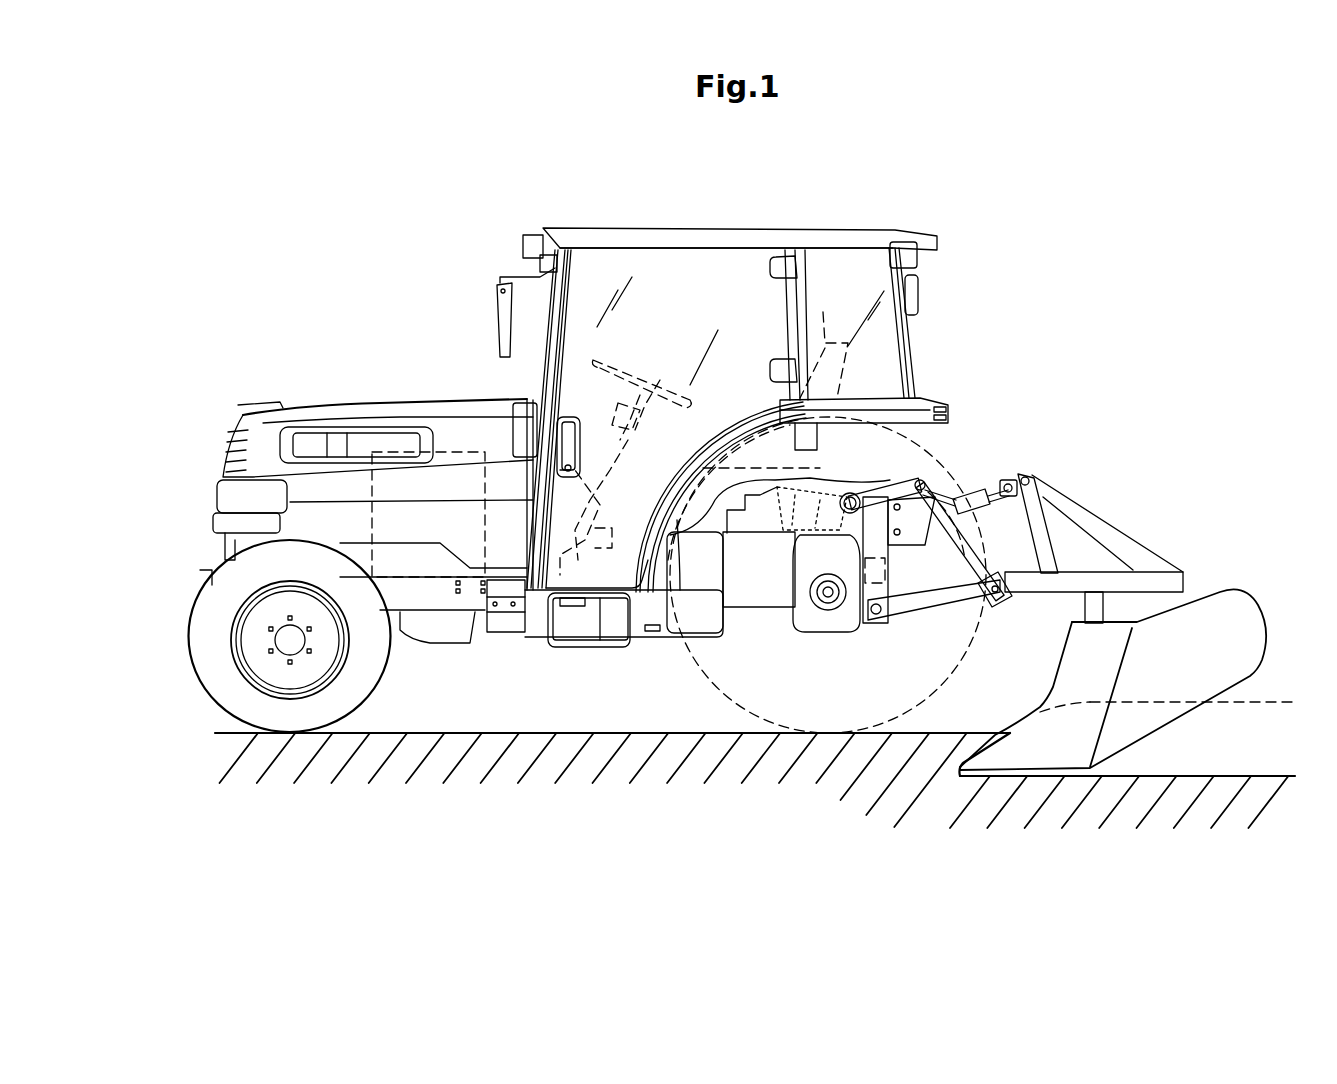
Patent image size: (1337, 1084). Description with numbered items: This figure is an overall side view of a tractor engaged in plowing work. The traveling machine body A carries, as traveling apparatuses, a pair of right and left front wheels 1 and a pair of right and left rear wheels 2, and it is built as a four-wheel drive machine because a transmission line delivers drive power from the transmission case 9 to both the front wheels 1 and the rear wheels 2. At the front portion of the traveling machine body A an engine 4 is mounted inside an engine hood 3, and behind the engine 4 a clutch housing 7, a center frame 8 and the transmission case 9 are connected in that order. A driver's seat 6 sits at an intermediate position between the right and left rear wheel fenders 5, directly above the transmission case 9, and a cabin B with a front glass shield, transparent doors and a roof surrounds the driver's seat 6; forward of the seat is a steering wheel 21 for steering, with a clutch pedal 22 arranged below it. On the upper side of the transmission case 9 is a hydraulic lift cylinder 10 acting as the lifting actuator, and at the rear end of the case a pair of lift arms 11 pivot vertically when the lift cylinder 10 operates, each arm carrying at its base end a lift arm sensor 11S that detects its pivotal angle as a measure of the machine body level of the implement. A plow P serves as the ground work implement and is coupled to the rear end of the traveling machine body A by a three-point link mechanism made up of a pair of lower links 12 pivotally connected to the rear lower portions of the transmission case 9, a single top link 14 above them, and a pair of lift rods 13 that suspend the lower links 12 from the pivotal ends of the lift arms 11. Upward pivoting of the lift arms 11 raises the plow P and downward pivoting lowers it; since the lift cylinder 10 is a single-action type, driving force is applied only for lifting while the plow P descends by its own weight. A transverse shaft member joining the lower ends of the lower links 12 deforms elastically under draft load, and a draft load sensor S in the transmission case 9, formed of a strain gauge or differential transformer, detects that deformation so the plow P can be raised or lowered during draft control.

The front wheels 1 is at (387, 682).
The rear wheels 2 is at (695, 690).
The engine hood 3 is at (322, 407).
The engine 4 is at (457, 450).
The rear wheel fenders 5 is at (920, 405).
The driver's seat 6 is at (824, 342).
The clutch housing 7 is at (503, 633).
The center frame 8 is at (580, 622).
The transmission case 9 is at (760, 600).
The lift cylinder 10 is at (752, 526).
The lift arms 11 is at (905, 477).
The lift arm sensor 11S is at (850, 493).
The lower links 12 is at (928, 604).
The lift rods 13 is at (970, 520).
The top link 14 is at (970, 497).
The steering wheel 21 is at (637, 380).
The clutch pedal 22 is at (602, 507).
The traveling machine body A is at (537, 675).
The cabin B is at (703, 228).
The draft load sensor S is at (888, 565).
The plow P is at (1232, 600).